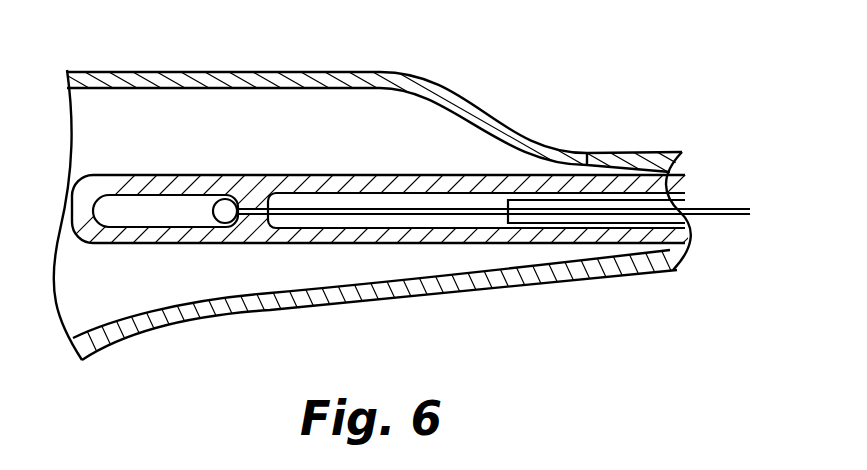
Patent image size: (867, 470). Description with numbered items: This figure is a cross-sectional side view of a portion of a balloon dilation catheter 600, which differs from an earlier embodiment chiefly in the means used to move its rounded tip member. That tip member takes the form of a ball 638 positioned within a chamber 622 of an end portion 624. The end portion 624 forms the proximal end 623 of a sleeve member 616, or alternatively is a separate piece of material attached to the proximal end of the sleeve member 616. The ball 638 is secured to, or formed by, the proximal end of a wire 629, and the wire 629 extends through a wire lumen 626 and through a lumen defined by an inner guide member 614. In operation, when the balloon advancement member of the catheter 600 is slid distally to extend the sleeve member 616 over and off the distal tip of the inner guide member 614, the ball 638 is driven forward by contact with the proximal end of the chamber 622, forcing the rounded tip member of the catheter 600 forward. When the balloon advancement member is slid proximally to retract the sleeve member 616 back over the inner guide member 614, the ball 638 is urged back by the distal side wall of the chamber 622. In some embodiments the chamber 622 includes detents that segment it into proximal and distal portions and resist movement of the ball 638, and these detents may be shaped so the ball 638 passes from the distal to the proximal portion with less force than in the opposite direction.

The balloon dilation catheter 600 is at (602, 92).
The inner guide member 614 is at (562, 218).
The sleeve member 616 is at (643, 172).
The chamber 622 is at (142, 212).
The proximal end 623 is at (213, 177).
The end portion 624 is at (278, 167).
The wire lumen 626 is at (268, 225).
The wire 629 is at (728, 210).
The ball 638 is at (225, 220).